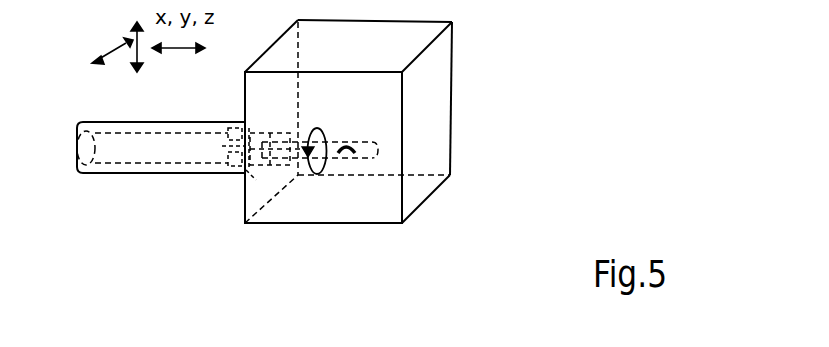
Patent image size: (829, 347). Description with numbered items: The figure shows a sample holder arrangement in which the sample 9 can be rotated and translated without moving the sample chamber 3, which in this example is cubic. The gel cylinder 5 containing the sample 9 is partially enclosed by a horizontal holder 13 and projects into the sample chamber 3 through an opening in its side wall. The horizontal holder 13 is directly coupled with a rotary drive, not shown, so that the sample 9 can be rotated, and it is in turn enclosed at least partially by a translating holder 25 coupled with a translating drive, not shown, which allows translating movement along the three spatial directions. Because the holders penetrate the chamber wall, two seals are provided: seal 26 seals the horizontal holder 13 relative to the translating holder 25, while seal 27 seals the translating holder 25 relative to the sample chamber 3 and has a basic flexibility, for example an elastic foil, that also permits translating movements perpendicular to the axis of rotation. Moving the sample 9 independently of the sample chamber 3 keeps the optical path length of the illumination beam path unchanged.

The sample chamber 3 is at (437, 77).
The gel cylinder 5 is at (377, 149).
The sample 9 is at (347, 157).
The horizontal holder 13 is at (283, 163).
The translating holder 25 is at (132, 177).
The seal 26 is at (217, 177).
The seal 27 is at (249, 225).